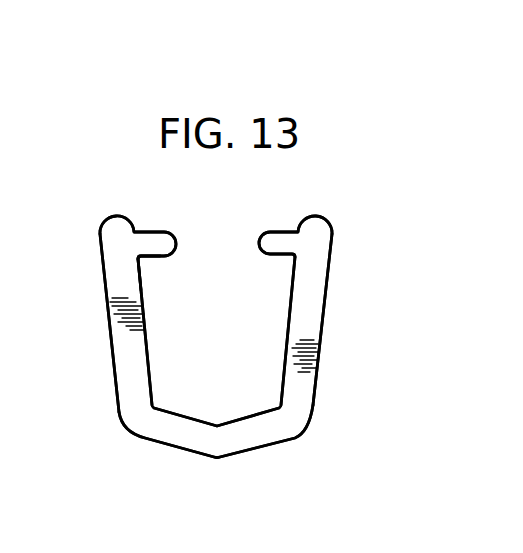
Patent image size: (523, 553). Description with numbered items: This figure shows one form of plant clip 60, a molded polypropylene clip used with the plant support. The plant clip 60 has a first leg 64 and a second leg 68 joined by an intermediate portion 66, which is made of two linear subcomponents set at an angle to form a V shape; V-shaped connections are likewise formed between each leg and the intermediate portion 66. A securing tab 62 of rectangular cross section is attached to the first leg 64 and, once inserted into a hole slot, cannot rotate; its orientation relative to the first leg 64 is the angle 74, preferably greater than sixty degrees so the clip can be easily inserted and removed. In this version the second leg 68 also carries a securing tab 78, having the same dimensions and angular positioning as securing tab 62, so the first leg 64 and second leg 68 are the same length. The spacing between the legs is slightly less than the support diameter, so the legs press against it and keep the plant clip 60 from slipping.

The plant clip 60 is at (320, 331).
The securing tab 62 is at (156, 242).
The first leg 64 is at (123, 352).
The intermediate portion 66 is at (258, 435).
The second leg 68 is at (318, 287).
The angle 74 is at (164, 258).
The securing tab 78 is at (276, 240).